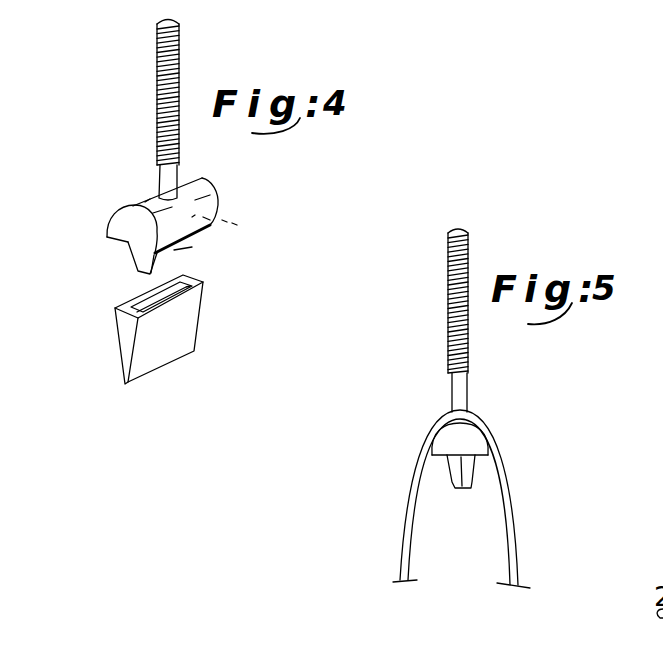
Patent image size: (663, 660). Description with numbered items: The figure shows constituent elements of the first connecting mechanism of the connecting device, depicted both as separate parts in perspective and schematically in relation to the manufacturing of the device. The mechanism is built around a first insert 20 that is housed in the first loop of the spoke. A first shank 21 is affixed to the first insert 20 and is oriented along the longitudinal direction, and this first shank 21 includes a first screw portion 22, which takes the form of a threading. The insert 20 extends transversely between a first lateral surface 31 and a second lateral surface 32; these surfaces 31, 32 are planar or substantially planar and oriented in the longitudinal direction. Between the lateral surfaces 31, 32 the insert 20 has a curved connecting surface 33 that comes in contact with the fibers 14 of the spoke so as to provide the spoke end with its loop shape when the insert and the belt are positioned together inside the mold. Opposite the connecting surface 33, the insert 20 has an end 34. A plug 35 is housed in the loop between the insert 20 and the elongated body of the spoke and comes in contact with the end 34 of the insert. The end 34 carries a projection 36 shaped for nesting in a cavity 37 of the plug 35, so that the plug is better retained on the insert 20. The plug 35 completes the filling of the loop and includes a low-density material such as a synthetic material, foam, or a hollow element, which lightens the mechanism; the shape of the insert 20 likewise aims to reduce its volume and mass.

In FIG. 5, the fibers 14 is at (513, 540).
In FIG. 4, the first insert 20 is at (219, 203).
In FIG. 5, the first insert 20 is at (480, 448).
In FIG. 4, the first shank 21 is at (157, 177).
In FIG. 5, the first shank 21 is at (470, 392).
In FIG. 4, the first screw portion 22 is at (157, 113).
In FIG. 5, the first screw portion 22 is at (448, 330).
In FIG. 4, the first lateral surface 31 is at (131, 236).
In FIG. 4, the second lateral surface 32 is at (235, 232).
In FIG. 4, the connecting surface 33 is at (145, 201).
In FIG. 5, the end 34 is at (455, 490).
In FIG. 4, the plug 35 is at (137, 387).
In FIG. 4, the projection 36 is at (178, 250).
In FIG. 4, the cavity 37 is at (145, 289).